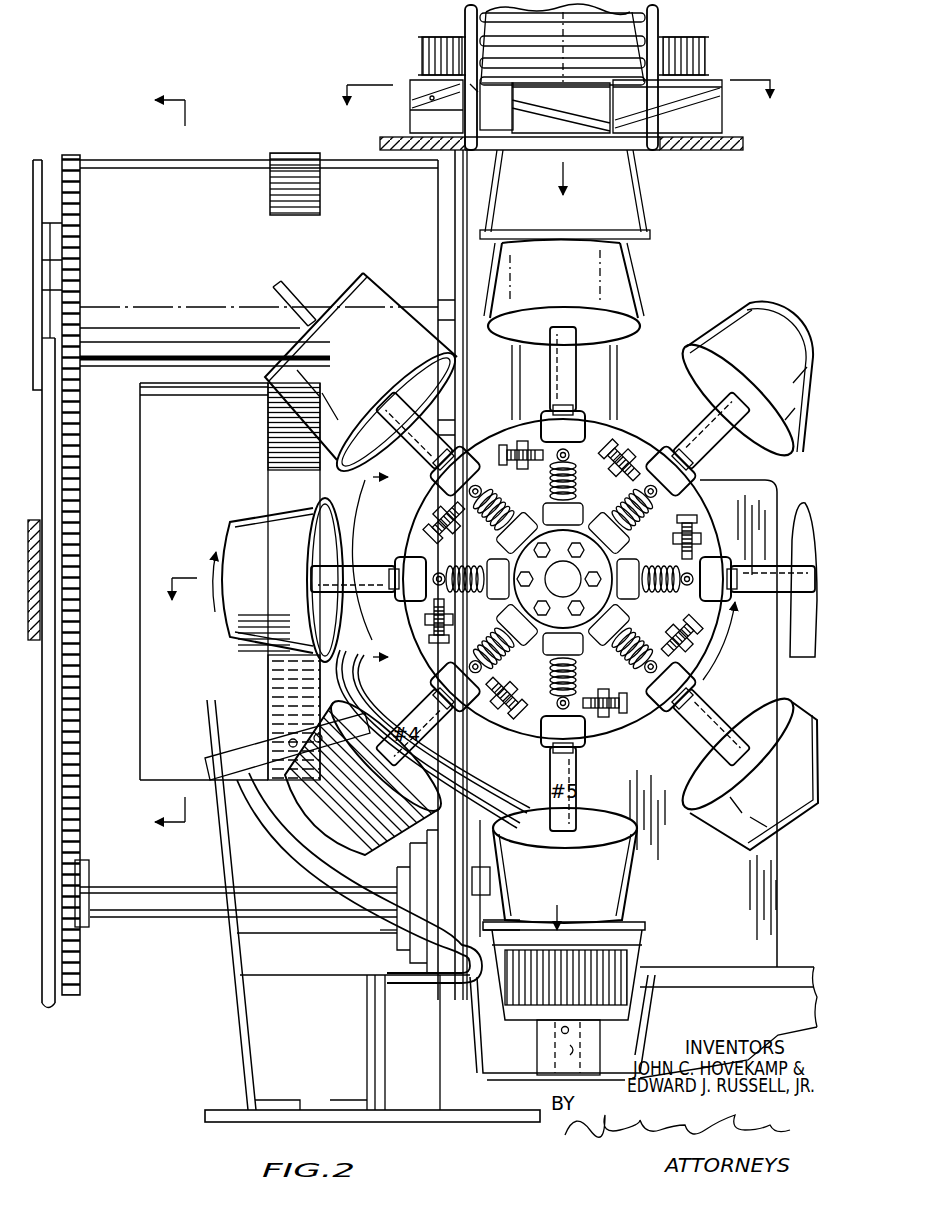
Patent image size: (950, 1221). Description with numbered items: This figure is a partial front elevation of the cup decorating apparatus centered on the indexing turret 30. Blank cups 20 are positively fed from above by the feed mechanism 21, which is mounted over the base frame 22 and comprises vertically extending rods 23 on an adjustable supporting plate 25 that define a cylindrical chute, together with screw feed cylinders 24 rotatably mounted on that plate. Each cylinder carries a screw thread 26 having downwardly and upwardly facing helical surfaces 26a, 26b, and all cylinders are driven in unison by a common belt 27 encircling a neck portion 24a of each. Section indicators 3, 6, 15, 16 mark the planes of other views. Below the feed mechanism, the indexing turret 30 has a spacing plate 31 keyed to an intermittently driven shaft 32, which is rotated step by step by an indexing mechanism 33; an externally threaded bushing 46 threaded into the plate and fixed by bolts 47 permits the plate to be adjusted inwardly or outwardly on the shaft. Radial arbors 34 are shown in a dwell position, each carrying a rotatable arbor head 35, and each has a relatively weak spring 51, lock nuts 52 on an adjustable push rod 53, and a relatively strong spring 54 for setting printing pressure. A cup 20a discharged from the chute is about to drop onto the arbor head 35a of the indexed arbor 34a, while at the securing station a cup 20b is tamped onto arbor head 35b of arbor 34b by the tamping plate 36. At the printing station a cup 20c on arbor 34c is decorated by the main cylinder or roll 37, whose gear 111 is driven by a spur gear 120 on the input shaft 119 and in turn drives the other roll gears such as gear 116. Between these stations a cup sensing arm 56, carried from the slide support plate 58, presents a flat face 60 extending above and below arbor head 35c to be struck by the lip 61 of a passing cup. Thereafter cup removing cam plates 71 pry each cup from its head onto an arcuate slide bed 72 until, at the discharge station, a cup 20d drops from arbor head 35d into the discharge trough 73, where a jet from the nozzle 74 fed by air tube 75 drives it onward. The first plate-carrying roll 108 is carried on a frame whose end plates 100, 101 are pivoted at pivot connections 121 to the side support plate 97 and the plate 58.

The section line 3- 3 is at (367, 614).
The section line 6- 6 is at (392, 569).
The section line 15- 15 is at (145, 466).
The section line 16- 16 is at (560, 110).
The blank cups 20 is at (485, 38).
The cup 20a is at (634, 196).
The cup 20b is at (388, 335).
The cup 20c is at (230, 512).
The cup 20d is at (640, 944).
The feed mechanism 21 is at (395, 80).
The base frame 22 is at (793, 965).
The vertically extending rods 23 is at (463, 16).
The screw feed cylinders 24 is at (716, 99).
The neck portion 24a is at (675, 37).
The adjustable supporting plate 25 is at (737, 150).
The screw thread 26 is at (415, 103).
The downwardly facing helical surface 26a is at (430, 95).
The upwardly facing helical surface 26b is at (455, 96).
The common belt 27 is at (706, 60).
The indexing turret 30 is at (652, 350).
The spacing plate 31 is at (632, 442).
The intermittently driven shaft 32 is at (592, 572).
The indexing mechanism 33 is at (716, 482).
The arbors 34 is at (706, 414).
The indexed arbor 34a is at (575, 378).
The second indexed arbor 34b is at (450, 432).
The third indexed arbor 34c is at (372, 568).
The arbor head 35 is at (713, 305).
The arbor head 35a is at (632, 284).
The arbor head 35b is at (440, 390).
The arbor head 35c is at (346, 612).
The arbor head 35d is at (633, 870).
The tamping plate 36 is at (366, 283).
The main cylinder or roll 37 is at (140, 417).
The externally threaded bushing 46 is at (610, 598).
The bolts 47 is at (580, 528).
The relatively weak spring 51 is at (556, 673).
The lock nuts 52 is at (613, 700).
The adjustable push rod 53 is at (616, 726).
The relatively strong spring 54 is at (584, 697).
The cup sensing arm 56 is at (370, 532).
The slide support plate 58 is at (483, 752).
The flat face 60 is at (372, 512).
The lip or upper edge portion 61 is at (315, 541).
The cup removing cam plates 71 is at (490, 805).
The slide bed 72 is at (304, 838).
The cup discharge trough 73 is at (652, 1004).
The nozzle 74 is at (570, 1032).
The air tube 75 is at (580, 1051).
The side support plate 97 is at (45, 1010).
The end plate 100 is at (36, 158).
The end plate 101 is at (452, 178).
The first plate-carrying cylinder or roll 108 is at (217, 160).
The gear 111 is at (78, 760).
The gear 116 is at (80, 203).
The input shaft 119 is at (135, 920).
The spur gear 120 is at (82, 966).
The pivot connections 121 is at (477, 352).